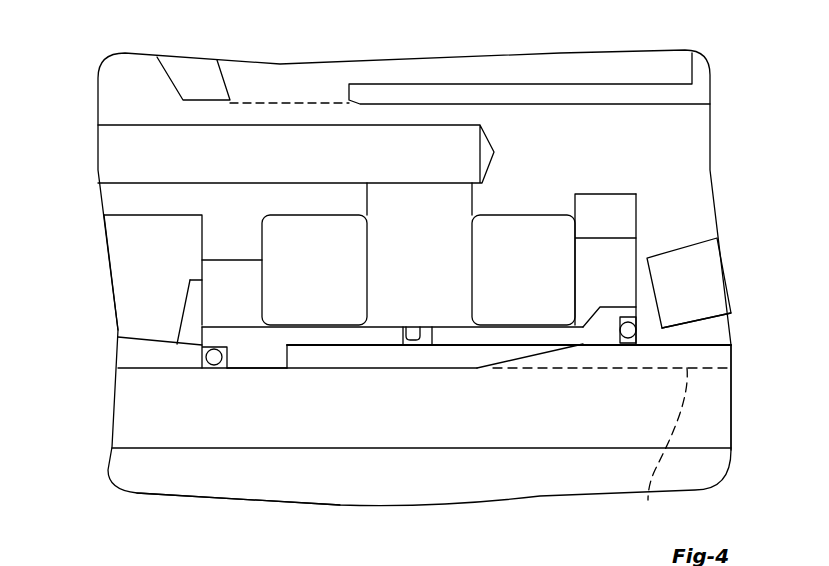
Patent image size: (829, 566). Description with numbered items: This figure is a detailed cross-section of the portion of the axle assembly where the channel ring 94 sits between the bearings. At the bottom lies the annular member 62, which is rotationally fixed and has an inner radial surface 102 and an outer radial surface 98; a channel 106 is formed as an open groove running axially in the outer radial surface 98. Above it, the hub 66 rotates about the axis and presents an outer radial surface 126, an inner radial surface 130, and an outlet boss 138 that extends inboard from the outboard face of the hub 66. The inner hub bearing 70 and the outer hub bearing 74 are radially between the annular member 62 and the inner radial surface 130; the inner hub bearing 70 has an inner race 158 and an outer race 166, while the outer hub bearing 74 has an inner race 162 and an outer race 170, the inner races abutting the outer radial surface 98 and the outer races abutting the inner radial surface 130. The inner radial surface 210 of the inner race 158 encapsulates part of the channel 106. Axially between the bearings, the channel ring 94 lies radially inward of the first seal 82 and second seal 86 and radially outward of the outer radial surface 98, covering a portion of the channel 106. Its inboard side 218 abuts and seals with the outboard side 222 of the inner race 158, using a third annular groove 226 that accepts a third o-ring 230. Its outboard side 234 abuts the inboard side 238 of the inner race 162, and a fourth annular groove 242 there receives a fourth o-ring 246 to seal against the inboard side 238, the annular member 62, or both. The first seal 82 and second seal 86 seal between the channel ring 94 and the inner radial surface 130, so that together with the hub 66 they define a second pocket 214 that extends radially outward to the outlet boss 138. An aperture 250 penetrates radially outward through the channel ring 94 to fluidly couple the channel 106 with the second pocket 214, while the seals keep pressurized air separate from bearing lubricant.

The hub 66 is at (117, 90).
The outer radial surface 126 is at (445, 100).
The outlet boss 138 is at (108, 145).
The inner radial surface 130 is at (172, 217).
The outer race 170 is at (122, 253).
The outer hub bearing 74 is at (125, 285).
The inner race 162 is at (123, 352).
The inboard side 238 is at (200, 353).
The annular member 62 is at (127, 425).
The fourth o-ring 246 is at (212, 362).
The channel ring 94 is at (240, 367).
The fourth annular groove 242 is at (240, 362).
The outboard side 234 is at (205, 335).
The second seal 86 is at (318, 218).
The first seal 82 is at (530, 218).
The outer radial surface 98 is at (368, 350).
The aperture 250 is at (418, 333).
The second pocket 214 is at (437, 290).
The third o-ring 230 is at (623, 336).
The inboard side 218 is at (600, 305).
The third annular groove 226 is at (630, 341).
The outer race 166 is at (705, 208).
The inner hub bearing 70 is at (715, 262).
The outboard side 222 is at (663, 327).
The inner race 158 is at (725, 337).
The inner radial surface 210 is at (713, 367).
The channel 106 is at (658, 449).
The inner radial surface 102 is at (400, 450).